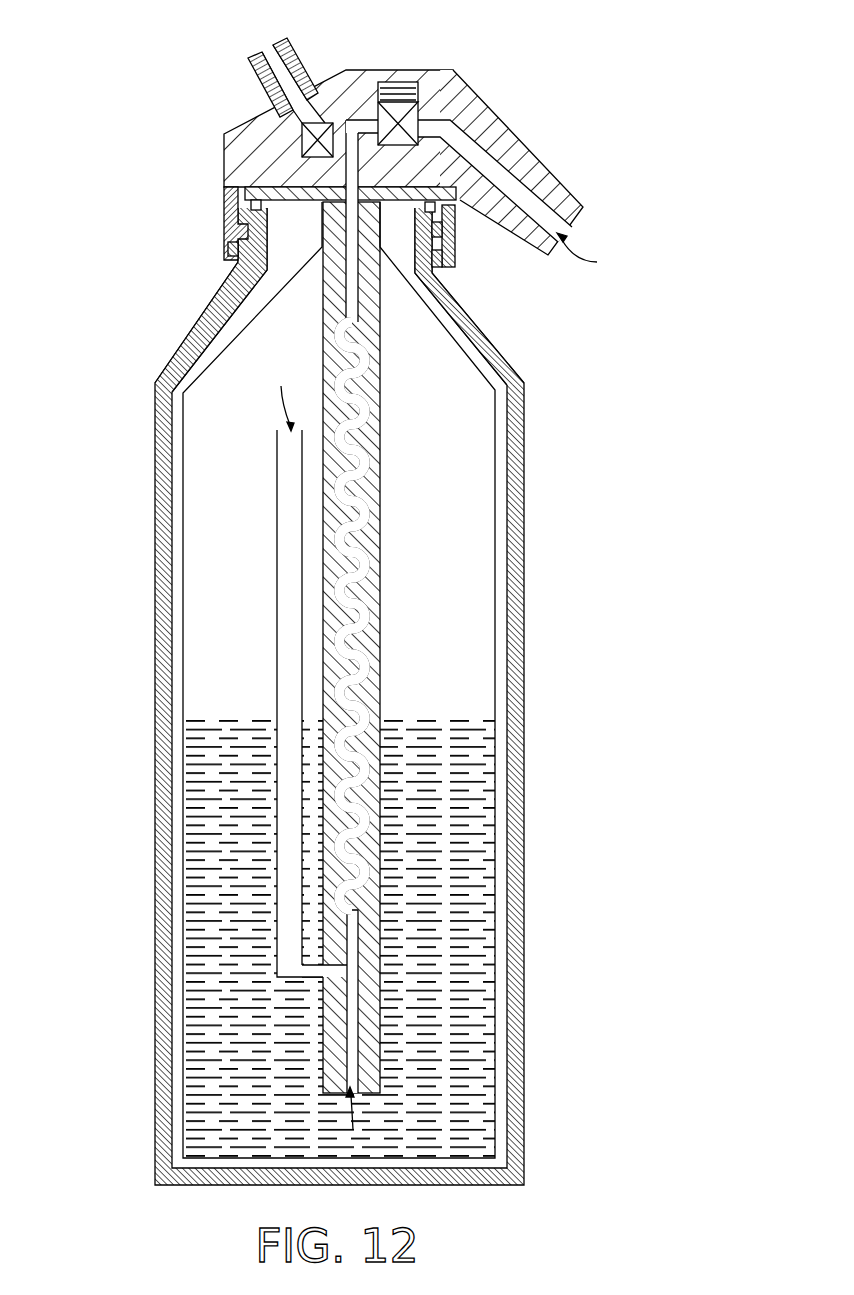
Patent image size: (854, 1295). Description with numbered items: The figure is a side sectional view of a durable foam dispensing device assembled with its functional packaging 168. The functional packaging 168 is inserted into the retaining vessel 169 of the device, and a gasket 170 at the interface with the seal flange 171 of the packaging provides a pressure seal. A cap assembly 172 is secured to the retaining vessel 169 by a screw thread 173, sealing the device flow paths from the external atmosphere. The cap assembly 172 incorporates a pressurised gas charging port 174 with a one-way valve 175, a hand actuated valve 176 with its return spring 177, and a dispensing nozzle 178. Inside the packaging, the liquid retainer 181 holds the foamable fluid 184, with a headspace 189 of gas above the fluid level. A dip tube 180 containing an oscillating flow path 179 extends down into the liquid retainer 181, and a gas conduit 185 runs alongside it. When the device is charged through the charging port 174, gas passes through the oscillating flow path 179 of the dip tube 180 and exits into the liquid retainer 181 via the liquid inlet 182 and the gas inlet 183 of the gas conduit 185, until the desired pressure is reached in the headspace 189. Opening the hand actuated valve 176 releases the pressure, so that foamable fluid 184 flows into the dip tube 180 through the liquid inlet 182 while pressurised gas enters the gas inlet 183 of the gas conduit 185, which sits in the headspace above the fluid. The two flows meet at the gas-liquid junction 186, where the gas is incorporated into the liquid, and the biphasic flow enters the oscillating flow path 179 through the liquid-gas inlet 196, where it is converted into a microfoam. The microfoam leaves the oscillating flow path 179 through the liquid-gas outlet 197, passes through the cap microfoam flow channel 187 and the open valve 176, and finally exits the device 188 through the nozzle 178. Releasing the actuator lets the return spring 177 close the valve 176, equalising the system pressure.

The functional packaging 168 is at (380, 367).
The retaining vessel 169 is at (526, 466).
The gasket 170 is at (224, 230).
The seal flange 171 is at (246, 190).
The cap assembly 172 is at (224, 140).
The screw thread 173 is at (458, 244).
The pressurised gas charging port 174 is at (283, 42).
The one-way valve 175 is at (302, 135).
The hand actuated valve 176 is at (448, 100).
The return spring 177 is at (402, 86).
The dispensing nozzle 178 is at (533, 152).
The oscillating flow path 179 is at (364, 680).
The dip tube 180 is at (378, 858).
The liquid retainer 181 is at (247, 321).
The liquid inlet 182 is at (353, 1121).
The gas inlet 183 is at (275, 396).
The foamable fluid 184 is at (203, 833).
The gas conduit 185 is at (277, 626).
The gas-liquid junction 186 is at (340, 968).
The cap microfoam flow channel 187 is at (352, 127).
The device exit 188 is at (597, 254).
The headspace 189 is at (455, 574).
The liquid-gas inlet 196 is at (360, 910).
The liquid-gas outlet 197 is at (356, 326).